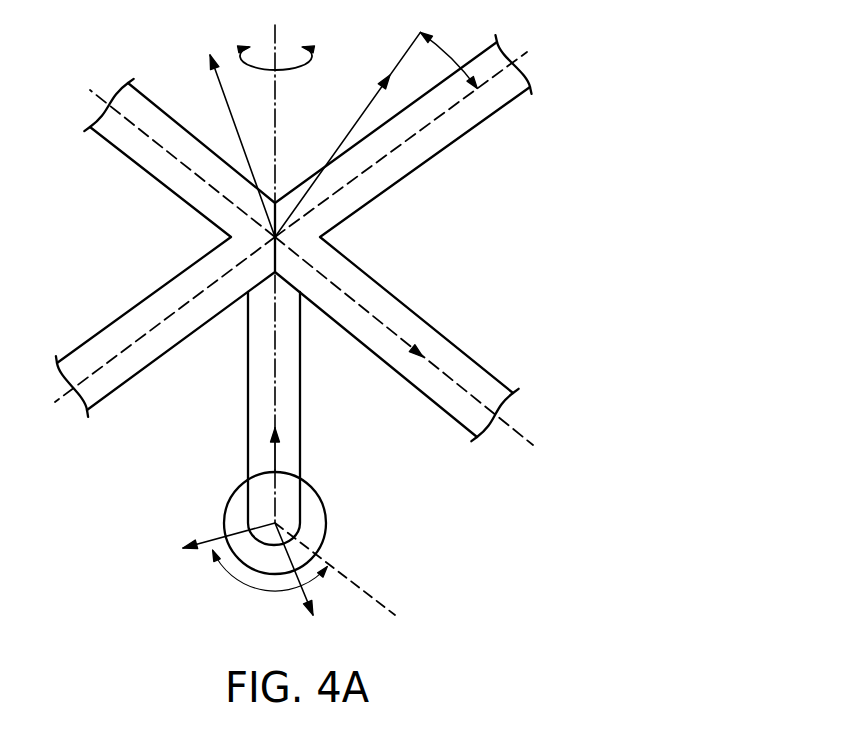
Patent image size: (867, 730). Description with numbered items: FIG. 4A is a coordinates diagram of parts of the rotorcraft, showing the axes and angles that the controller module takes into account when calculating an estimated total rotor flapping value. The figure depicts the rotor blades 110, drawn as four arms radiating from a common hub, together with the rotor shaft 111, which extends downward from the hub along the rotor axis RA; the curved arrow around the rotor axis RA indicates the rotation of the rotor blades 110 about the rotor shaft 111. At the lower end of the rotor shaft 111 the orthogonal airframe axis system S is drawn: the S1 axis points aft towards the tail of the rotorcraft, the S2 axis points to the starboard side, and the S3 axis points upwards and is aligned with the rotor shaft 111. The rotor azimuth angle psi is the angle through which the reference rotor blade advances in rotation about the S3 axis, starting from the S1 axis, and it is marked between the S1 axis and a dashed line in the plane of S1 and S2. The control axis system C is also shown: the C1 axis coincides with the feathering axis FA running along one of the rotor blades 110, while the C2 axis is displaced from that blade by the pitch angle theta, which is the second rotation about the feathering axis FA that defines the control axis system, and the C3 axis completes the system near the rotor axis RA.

The rotor blades 110 is at (118, 151).
The rotor shaft 111 is at (248, 404).
The rotor axis RA is at (276, 261).
The first control axis C1 is at (518, 430).
The second control axis C2 is at (376, 134).
The third control axis C3 is at (232, 146).
The first airframe axis S1 is at (219, 542).
The second airframe axis S2 is at (304, 582).
The third airframe axis S3 is at (266, 449).